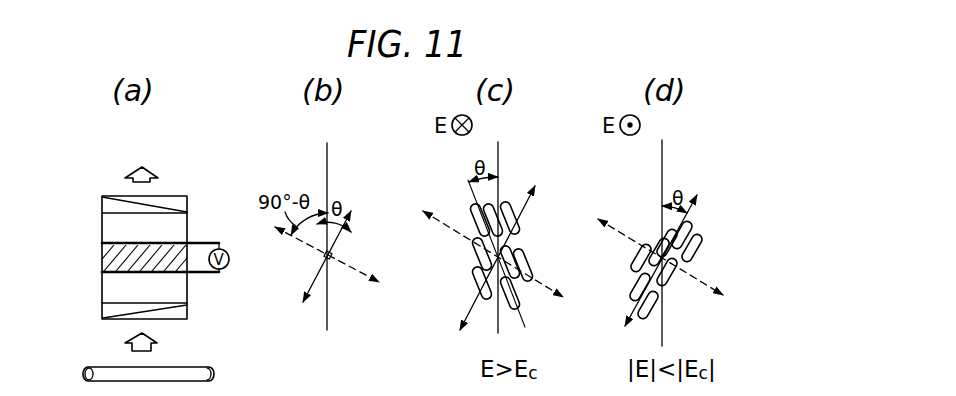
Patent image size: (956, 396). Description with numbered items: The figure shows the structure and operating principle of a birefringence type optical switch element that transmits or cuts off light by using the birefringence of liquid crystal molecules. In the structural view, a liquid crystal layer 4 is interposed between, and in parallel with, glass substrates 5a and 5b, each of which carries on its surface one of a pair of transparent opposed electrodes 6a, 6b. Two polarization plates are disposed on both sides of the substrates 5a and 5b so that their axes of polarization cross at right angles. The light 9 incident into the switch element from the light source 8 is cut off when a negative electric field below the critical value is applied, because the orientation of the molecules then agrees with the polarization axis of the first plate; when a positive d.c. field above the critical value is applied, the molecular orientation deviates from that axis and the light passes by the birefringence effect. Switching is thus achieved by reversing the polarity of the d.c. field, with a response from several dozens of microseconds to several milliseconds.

The liquid crystal layer 4 is at (102, 262).
The glass substrate 5a is at (181, 230).
The glass substrate 5b is at (181, 289).
The transparent opposed electrode 6a is at (102, 243).
The transparent opposed electrode 6b is at (102, 273).
The light source 8 is at (214, 375).
The light 9 is at (148, 344).